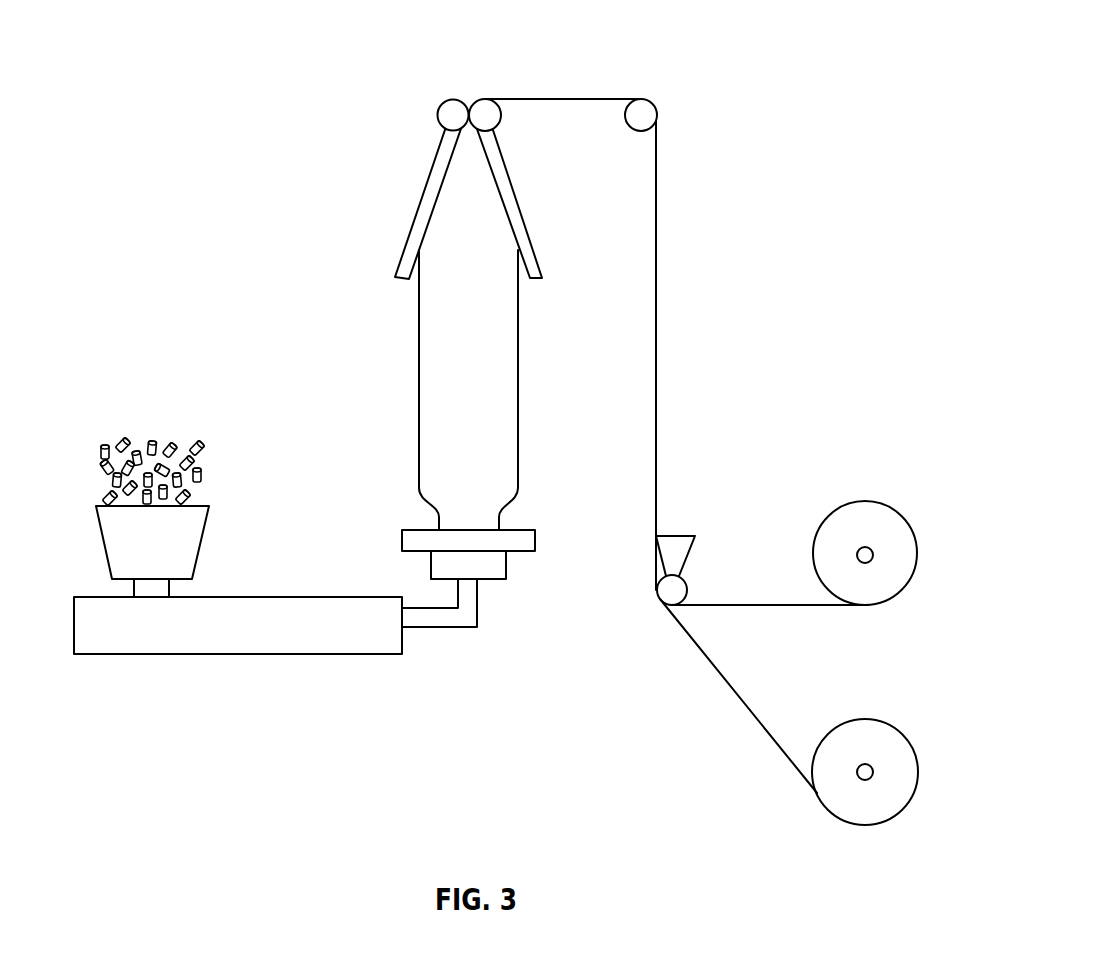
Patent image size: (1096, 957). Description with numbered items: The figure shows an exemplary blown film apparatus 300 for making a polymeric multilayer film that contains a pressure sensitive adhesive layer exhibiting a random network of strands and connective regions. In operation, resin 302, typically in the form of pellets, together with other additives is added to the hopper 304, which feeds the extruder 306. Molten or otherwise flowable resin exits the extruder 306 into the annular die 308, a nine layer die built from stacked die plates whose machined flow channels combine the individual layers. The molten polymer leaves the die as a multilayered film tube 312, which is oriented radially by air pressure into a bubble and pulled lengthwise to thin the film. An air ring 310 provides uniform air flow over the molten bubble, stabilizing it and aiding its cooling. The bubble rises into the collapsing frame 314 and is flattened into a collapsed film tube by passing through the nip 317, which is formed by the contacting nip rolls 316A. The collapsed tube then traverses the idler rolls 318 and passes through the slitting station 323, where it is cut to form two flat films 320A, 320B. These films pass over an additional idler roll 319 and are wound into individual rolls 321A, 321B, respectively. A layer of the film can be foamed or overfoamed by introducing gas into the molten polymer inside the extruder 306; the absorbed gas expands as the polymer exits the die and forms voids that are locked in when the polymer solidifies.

The apparatus for making polymeric multilayer film 300 is at (195, 71).
The resin 302 is at (203, 445).
The hopper 304 is at (101, 541).
The extruder 306 is at (298, 633).
The annular die 308 is at (490, 575).
The air ring 310 is at (537, 540).
The multilayered film tube 312 is at (498, 403).
The collapsing frame 314 is at (515, 195).
The nip roll 316A is at (448, 103).
The nip 317 is at (468, 103).
The idler rolls 318 is at (642, 115).
The additional idler roll 319 is at (672, 592).
The flat film 320A is at (757, 607).
The flat film 320B is at (740, 702).
The roll 321A is at (863, 502).
The roll 321B is at (863, 720).
The slitting station 323 is at (677, 540).